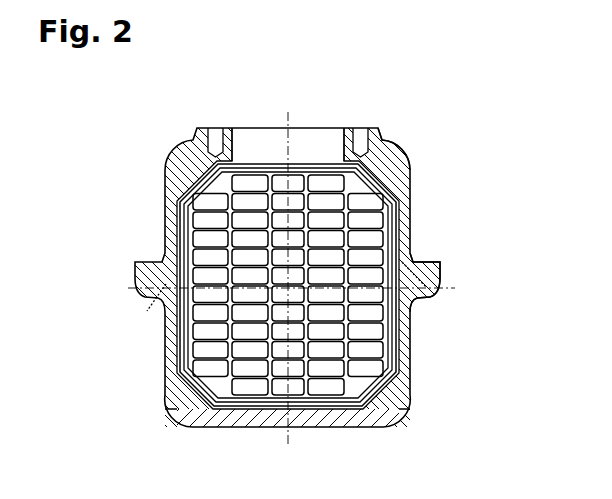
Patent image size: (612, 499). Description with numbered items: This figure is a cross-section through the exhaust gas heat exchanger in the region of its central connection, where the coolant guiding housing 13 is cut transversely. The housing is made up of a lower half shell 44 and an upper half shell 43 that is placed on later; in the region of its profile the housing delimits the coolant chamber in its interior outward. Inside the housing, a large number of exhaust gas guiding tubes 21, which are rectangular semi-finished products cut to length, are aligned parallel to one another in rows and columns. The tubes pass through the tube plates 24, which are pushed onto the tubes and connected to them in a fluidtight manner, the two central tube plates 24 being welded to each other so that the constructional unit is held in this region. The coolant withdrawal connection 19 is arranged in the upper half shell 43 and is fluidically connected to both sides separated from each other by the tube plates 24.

The coolant guiding housing 13 is at (433, 243).
The coolant withdrawal connection 19 is at (318, 138).
The exhaust gas guiding tubes 21 is at (197, 372).
The tube plates 24 is at (238, 168).
The upper half shell 43 is at (413, 162).
The lower half shell 44 is at (403, 320).